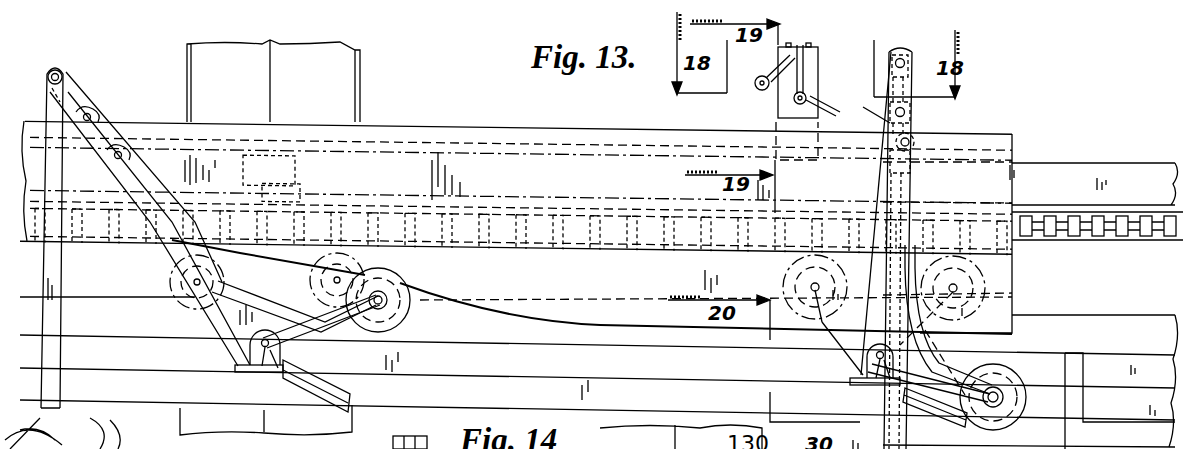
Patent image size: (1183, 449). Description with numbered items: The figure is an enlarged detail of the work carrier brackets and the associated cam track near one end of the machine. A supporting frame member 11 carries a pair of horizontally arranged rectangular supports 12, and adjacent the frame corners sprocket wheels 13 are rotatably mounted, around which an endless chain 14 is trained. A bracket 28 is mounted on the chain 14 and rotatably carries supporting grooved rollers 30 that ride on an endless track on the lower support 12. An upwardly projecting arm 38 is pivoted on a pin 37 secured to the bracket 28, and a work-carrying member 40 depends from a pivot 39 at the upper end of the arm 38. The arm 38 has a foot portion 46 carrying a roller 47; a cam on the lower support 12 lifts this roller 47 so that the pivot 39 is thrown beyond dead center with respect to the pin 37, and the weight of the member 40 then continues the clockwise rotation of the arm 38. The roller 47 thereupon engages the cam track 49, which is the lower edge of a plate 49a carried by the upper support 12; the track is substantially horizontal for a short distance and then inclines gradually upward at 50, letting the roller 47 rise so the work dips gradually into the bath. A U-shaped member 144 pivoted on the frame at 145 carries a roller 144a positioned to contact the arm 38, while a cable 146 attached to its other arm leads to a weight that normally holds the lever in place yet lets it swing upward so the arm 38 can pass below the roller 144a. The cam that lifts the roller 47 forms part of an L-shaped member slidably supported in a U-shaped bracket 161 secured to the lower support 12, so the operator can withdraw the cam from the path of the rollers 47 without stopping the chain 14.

The supporting frame member 11 is at (342, 80).
The horizontally arranged support 12 is at (1082, 173).
The sprocket wheel 13 is at (1122, 243).
The endless chain 14 is at (1173, 262).
The bracket 28 is at (213, 312).
The supporting grooved roller 30 is at (178, 280).
The pin 37 is at (262, 377).
The upwardly projecting arm 38 is at (118, 170).
The pivot 39 is at (65, 75).
The work-carrying member 40 is at (48, 318).
The foot portion 46 is at (333, 335).
The roller 47 is at (413, 315).
The cam track 49 is at (975, 340).
The plate 49a is at (1005, 147).
The upwardly inclined portion of cam track 50 is at (452, 283).
The U-shaped member 144 is at (818, 66).
The roller 144a is at (778, 112).
The pivot 145 is at (808, 47).
The cable 146 is at (863, 107).
The U-shaped bracket 161 is at (1068, 398).